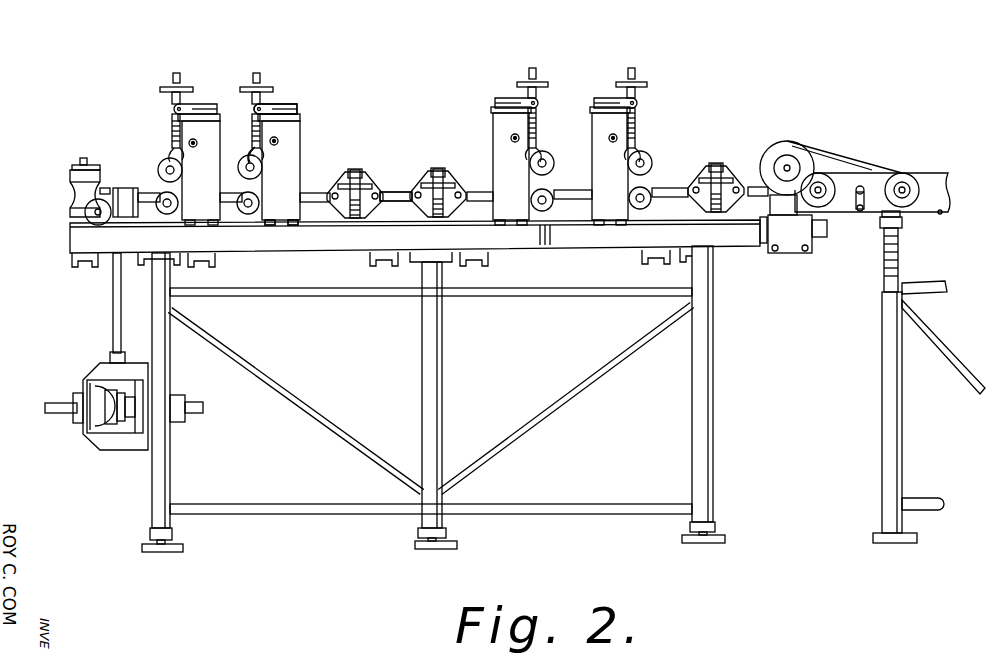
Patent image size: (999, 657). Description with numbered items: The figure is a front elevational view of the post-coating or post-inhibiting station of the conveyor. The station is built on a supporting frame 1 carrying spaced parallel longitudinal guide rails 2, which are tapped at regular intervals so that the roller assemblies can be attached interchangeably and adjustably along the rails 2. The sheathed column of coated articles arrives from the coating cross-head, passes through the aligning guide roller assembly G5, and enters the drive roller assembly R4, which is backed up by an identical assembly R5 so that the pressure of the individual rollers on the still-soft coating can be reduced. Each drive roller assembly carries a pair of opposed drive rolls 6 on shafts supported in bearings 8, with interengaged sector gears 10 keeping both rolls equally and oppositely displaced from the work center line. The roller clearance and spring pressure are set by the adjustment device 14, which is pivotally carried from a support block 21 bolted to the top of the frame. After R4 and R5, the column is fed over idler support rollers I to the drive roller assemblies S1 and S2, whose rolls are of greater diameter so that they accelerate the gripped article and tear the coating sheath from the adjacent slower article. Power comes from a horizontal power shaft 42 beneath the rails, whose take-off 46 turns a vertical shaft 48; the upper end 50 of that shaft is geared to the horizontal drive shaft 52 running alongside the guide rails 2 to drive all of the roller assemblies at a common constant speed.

The supporting frame 1 is at (430, 323).
The guide rail 2 is at (317, 242).
The drive roll 6 is at (257, 160).
The bearing 8 is at (278, 140).
The sector gear 10 is at (303, 172).
The adjustment device 14 is at (276, 153).
The support block 21 is at (283, 104).
The power shaft 42 is at (60, 403).
The power take-off 46 is at (122, 413).
The vertical shaft 48 is at (117, 310).
The upper end of shaft 50 is at (117, 197).
The horizontal drive shaft 52 is at (392, 192).
The idler support roller I is at (365, 180).
The aligning guide roller assembly G5 is at (73, 170).
The drive roller assembly R4 is at (193, 167).
The drive roller assembly R5 is at (280, 177).
The drive roller assembly S1 is at (502, 145).
The drive roller assembly S2 is at (600, 143).